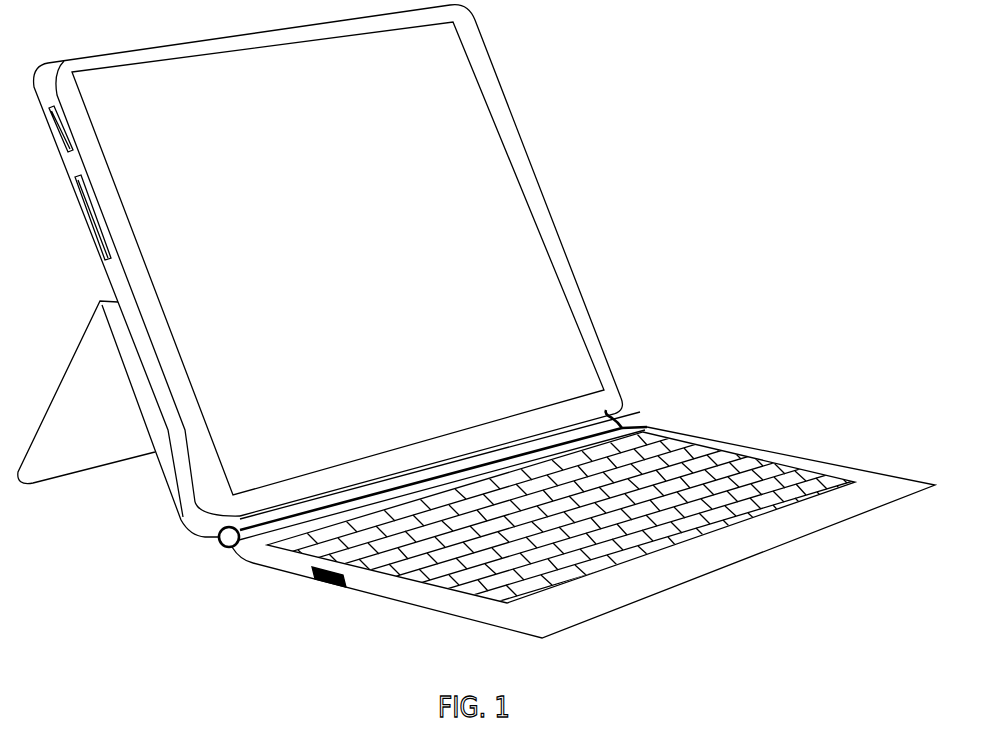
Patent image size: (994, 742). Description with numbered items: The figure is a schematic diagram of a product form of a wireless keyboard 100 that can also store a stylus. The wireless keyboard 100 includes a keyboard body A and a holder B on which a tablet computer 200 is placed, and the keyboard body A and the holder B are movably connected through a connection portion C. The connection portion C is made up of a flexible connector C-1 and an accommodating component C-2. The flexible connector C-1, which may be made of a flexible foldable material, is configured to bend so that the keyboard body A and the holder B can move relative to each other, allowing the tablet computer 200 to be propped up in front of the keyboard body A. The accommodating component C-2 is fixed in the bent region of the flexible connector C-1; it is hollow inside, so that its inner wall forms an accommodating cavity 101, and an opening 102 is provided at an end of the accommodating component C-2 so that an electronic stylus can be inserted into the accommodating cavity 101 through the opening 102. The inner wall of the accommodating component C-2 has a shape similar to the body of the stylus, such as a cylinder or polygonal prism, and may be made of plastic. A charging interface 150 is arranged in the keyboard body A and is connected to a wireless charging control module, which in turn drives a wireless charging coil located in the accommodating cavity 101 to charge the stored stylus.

The tablet computer 200 is at (557, 228).
The wireless keyboard 100 is at (436, 610).
The accommodating cavity 101 is at (620, 417).
The opening 102 is at (229, 539).
The charging interface 150 is at (324, 583).
The keyboard body A is at (680, 432).
The holder B is at (160, 468).
The connection portion C is at (182, 530).
The flexible connector C-1 is at (207, 533).
The accommodating component C-2 is at (462, 460).